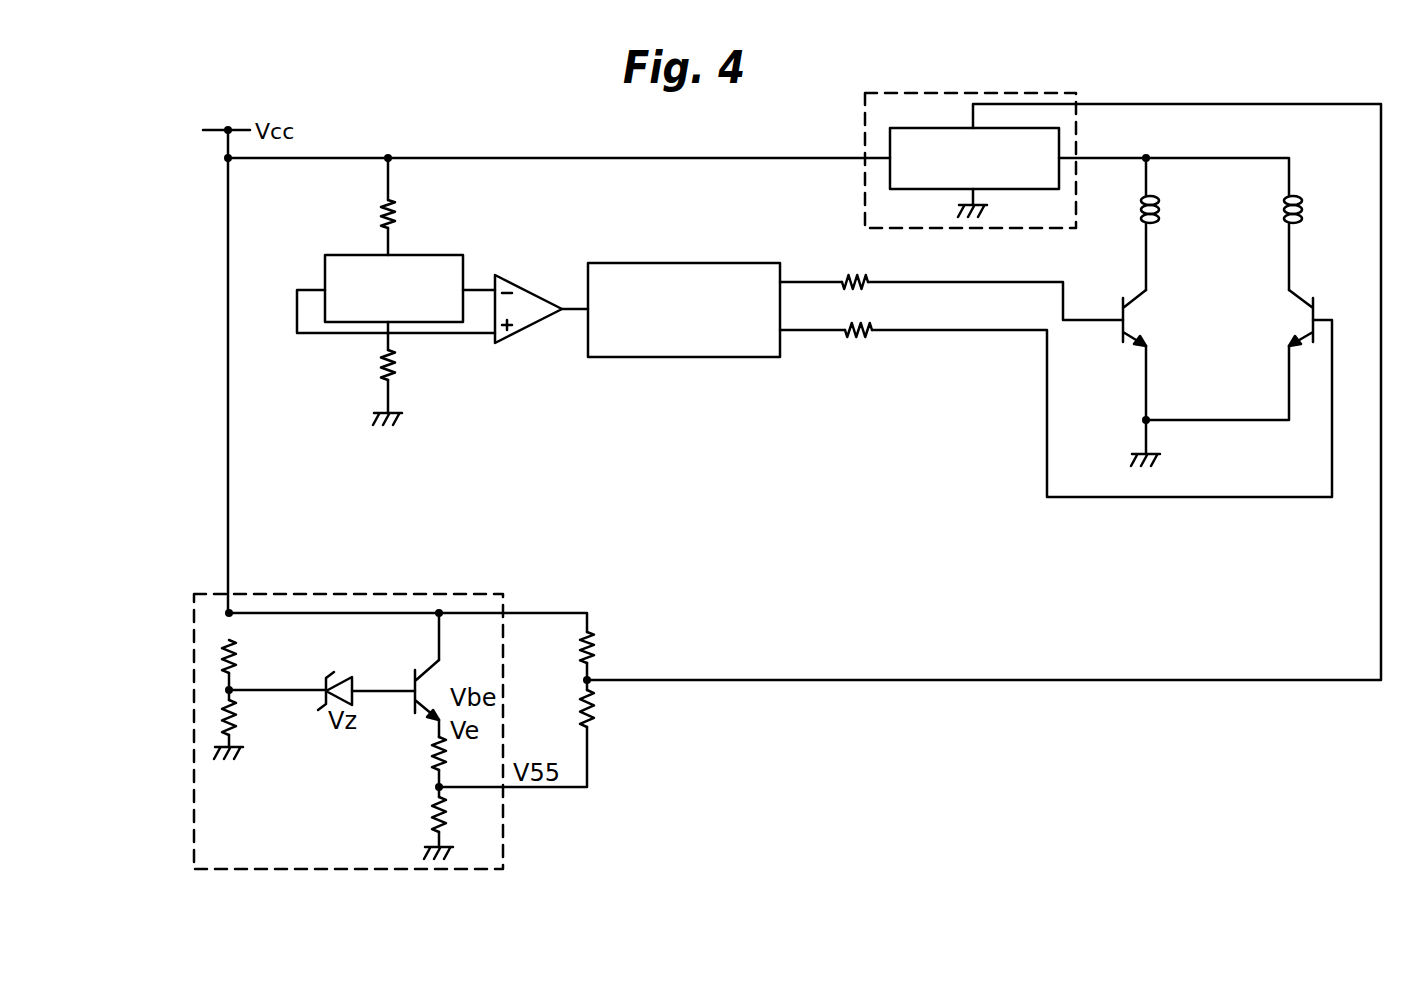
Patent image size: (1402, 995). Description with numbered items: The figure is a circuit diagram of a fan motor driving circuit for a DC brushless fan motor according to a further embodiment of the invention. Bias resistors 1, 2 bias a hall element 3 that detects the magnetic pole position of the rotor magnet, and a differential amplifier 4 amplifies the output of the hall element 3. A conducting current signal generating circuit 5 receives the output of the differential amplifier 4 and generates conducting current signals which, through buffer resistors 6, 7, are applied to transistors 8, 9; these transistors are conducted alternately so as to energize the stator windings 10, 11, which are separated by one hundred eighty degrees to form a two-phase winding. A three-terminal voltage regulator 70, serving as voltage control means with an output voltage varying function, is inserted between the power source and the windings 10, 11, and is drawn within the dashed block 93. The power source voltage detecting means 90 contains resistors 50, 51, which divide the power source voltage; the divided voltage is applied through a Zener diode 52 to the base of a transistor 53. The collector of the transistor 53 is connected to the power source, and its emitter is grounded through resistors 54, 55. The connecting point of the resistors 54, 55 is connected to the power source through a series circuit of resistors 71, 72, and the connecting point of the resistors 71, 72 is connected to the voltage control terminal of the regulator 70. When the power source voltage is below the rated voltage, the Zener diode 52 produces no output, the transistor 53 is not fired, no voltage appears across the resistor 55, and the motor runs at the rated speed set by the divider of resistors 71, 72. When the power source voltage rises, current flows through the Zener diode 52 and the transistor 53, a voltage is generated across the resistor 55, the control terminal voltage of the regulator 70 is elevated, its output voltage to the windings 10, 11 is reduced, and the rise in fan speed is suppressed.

The bias resistor 1 is at (385, 205).
The bias resistor 2 is at (385, 372).
The hall element 3 is at (420, 255).
The differential amplifier 4 is at (507, 277).
The conducting current signal generating circuit 5 is at (618, 263).
The buffer resistor 6 is at (855, 282).
The buffer resistor 7 is at (860, 330).
The transistor 8 is at (1138, 340).
The transistor 9 is at (1297, 340).
The stator winding 10 is at (1160, 205).
The stator winding 11 is at (1302, 214).
The resistor 50 is at (225, 650).
The resistor 51 is at (225, 712).
The Zener diode 52 is at (335, 676).
The transistor 53 is at (432, 668).
The resistor 54 is at (432, 750).
The resistor 55 is at (432, 810).
The three-terminal voltage regulator 70 is at (890, 142).
The resistor 71 is at (597, 713).
The resistor 72 is at (597, 650).
The power source voltage detecting means 90 is at (503, 828).
The voltage regulator block 93 is at (865, 117).